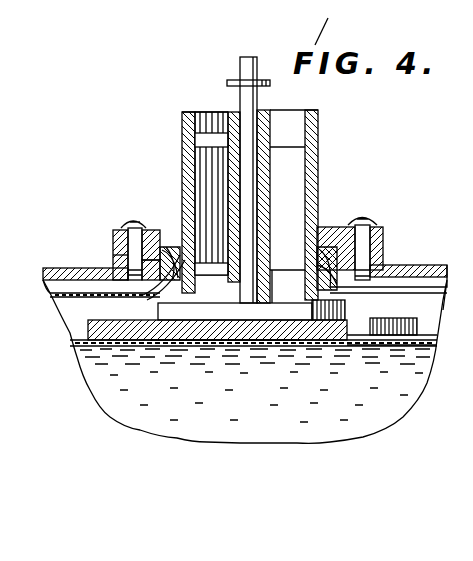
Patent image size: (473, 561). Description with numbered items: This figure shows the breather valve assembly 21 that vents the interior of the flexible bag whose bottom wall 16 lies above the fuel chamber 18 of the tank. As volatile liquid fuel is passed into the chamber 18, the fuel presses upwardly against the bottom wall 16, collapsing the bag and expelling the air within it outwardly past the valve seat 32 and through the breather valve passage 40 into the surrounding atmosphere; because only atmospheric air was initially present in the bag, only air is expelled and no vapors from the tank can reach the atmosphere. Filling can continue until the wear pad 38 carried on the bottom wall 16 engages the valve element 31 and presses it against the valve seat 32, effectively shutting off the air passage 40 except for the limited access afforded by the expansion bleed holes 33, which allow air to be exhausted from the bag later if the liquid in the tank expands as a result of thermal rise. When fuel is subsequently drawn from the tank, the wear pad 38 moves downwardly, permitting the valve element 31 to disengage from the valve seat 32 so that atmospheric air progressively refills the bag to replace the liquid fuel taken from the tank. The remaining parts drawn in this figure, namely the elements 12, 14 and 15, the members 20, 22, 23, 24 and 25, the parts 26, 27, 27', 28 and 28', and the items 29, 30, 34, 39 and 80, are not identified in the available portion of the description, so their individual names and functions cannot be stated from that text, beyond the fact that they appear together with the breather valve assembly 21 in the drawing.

The hull plate 12 is at (420, 266).
The hull 14 is at (25, 326).
The hull inner skin 15 is at (56, 298).
The bottom wall 16 is at (70, 336).
The chamber 18 is at (45, 273).
The sealing lip 20 is at (160, 290).
The breather valve assembly 21 is at (178, 116).
The flange 22 is at (113, 238).
The flange lower portion 23 is at (113, 252).
The bolt 24 is at (140, 224).
The flange 25 is at (362, 256).
The transducer element 26 is at (318, 322).
The seal 27 is at (125, 260).
The seal 27' is at (344, 235).
The chamber 28 is at (312, 131).
The lower chamber 28' is at (289, 253).
The bearing band 29 is at (214, 165).
The shaft 30 is at (240, 58).
The valve element 31 is at (138, 322).
The valve seat 32 is at (300, 305).
The expansion bleed holes 33 is at (182, 346).
The collar 34 is at (272, 83).
The wear pad 38 is at (252, 346).
The transducer block 39 is at (365, 345).
The breather valve passage 40 is at (220, 112).
The water 80 is at (137, 415).